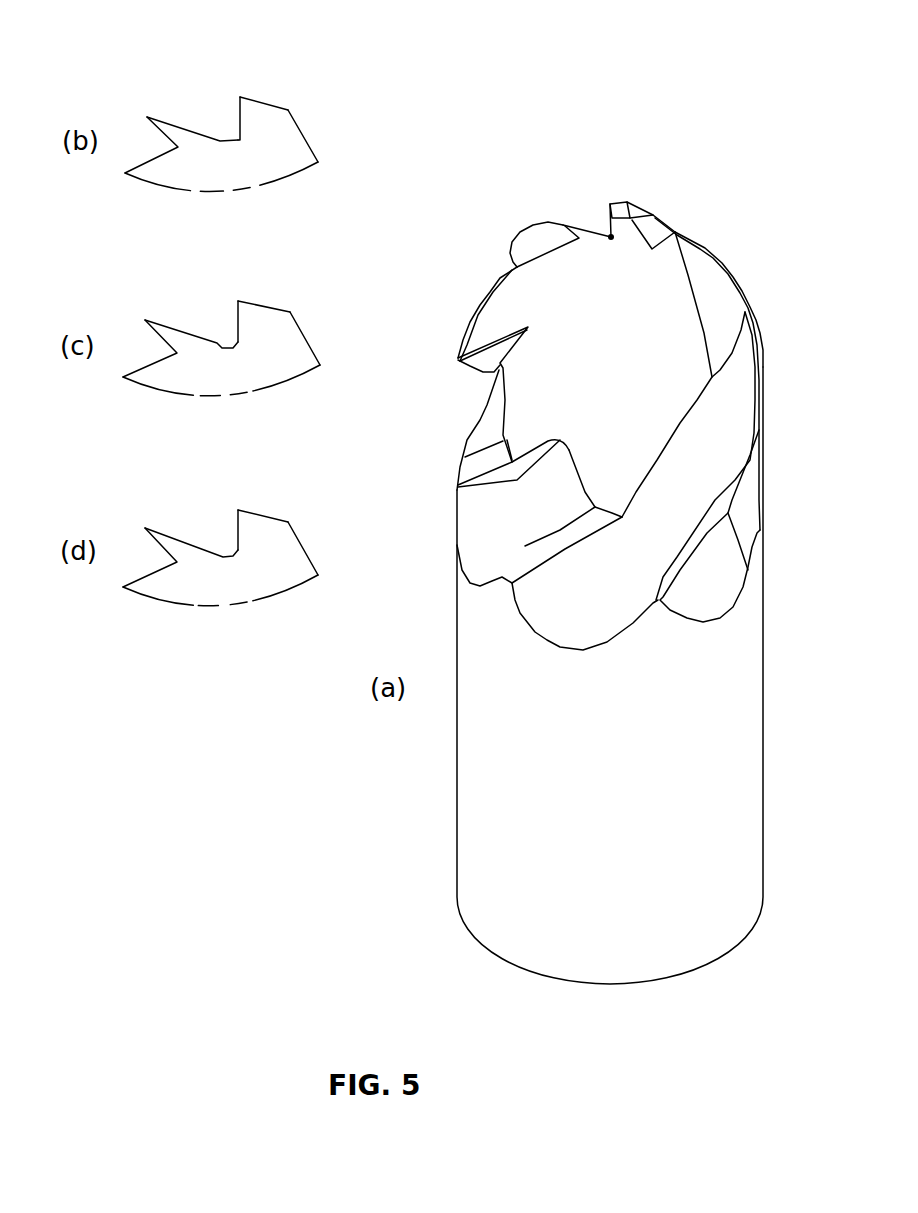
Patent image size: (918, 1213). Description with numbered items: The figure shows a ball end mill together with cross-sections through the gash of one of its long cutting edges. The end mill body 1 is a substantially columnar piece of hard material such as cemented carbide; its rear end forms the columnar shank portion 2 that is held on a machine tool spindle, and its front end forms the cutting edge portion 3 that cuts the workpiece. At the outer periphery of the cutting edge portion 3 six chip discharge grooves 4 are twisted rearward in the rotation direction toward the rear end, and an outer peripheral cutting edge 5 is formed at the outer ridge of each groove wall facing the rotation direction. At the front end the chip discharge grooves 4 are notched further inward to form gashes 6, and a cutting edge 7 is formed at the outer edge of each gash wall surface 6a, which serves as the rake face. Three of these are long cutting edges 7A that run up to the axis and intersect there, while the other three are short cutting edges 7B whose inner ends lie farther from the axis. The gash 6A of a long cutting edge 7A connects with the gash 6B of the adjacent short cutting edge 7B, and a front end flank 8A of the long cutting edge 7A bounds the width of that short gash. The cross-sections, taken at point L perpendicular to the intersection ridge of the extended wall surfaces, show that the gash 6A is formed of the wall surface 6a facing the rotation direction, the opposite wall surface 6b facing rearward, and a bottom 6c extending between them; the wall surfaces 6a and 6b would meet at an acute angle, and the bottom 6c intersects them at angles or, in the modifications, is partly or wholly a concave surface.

The end mill body 1 is at (845, 485).
The shank portion 2 is at (780, 600).
The cutting edge portion 3 is at (770, 470).
The chip discharge groove 4 is at (556, 593).
The outer peripheral cutting edge 5 is at (760, 415).
The gash 6 is at (577, 221).
The gash of the long cutting edge 6A is at (207, 61).
The gash of the short cutting edge 6B is at (673, 215).
The wall surface 6a is at (238, 116).
The wall surface 6b is at (168, 121).
The bottom 6c is at (227, 141).
The cutting edge 7 is at (610, 204).
The long cutting edge 7A is at (240, 97).
The short cutting edge 7B is at (512, 236).
The front end flank 8A is at (622, 207).
The point L is at (611, 237).